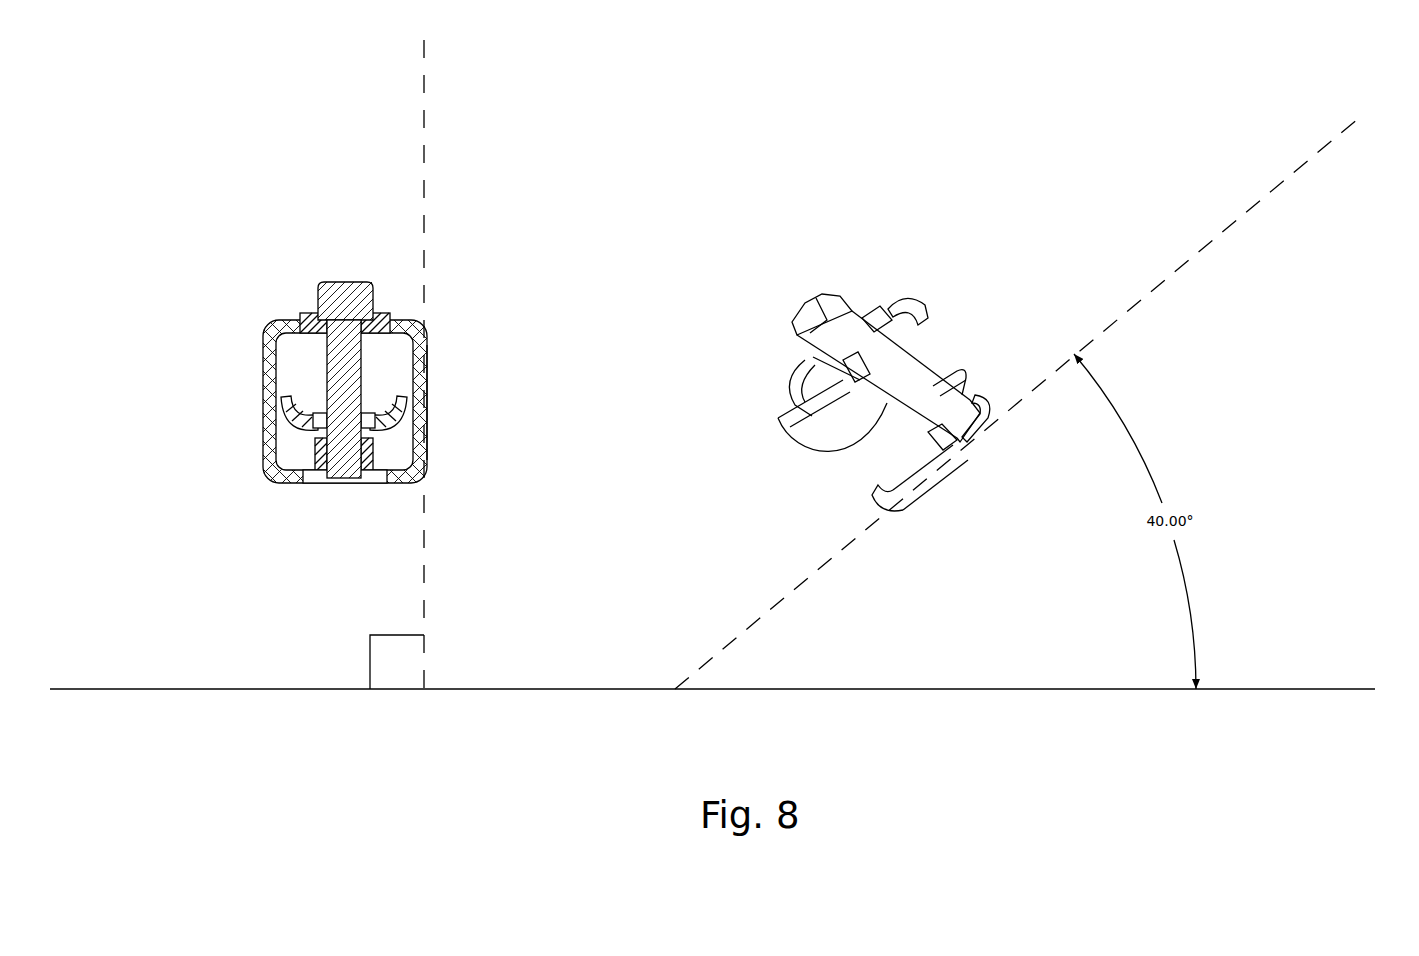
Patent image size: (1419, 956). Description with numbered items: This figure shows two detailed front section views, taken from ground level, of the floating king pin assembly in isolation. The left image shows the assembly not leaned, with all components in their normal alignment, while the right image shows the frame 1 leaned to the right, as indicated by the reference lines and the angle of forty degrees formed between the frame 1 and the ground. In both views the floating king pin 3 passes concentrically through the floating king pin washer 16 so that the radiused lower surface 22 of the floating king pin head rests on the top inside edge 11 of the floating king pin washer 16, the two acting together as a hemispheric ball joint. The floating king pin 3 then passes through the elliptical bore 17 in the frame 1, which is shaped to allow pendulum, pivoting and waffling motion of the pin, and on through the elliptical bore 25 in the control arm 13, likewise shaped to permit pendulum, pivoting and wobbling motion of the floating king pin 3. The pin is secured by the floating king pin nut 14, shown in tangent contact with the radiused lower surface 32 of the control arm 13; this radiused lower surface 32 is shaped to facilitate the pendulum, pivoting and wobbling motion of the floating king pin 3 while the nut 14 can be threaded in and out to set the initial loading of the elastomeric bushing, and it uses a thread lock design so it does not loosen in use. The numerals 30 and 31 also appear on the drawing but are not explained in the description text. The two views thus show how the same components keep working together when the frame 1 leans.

The frame 1 is at (272, 433).
The floating king pin 3 is at (345, 370).
The top inside edge of the floating king pin washer 11 is at (345, 370).
The control arm 13 is at (295, 413).
The floating king pin nut 14 is at (312, 457).
The floating king pin washer 16 is at (303, 312).
The elliptical bore 17 is at (373, 312).
The radiused lower surface of the floating king pin head 22 is at (325, 303).
The elliptical bore 25 is at (384, 422).
The base plate 30 is at (388, 482).
The side wall 31 is at (418, 378).
The radiused lower surface of the control arm 32 is at (393, 434).